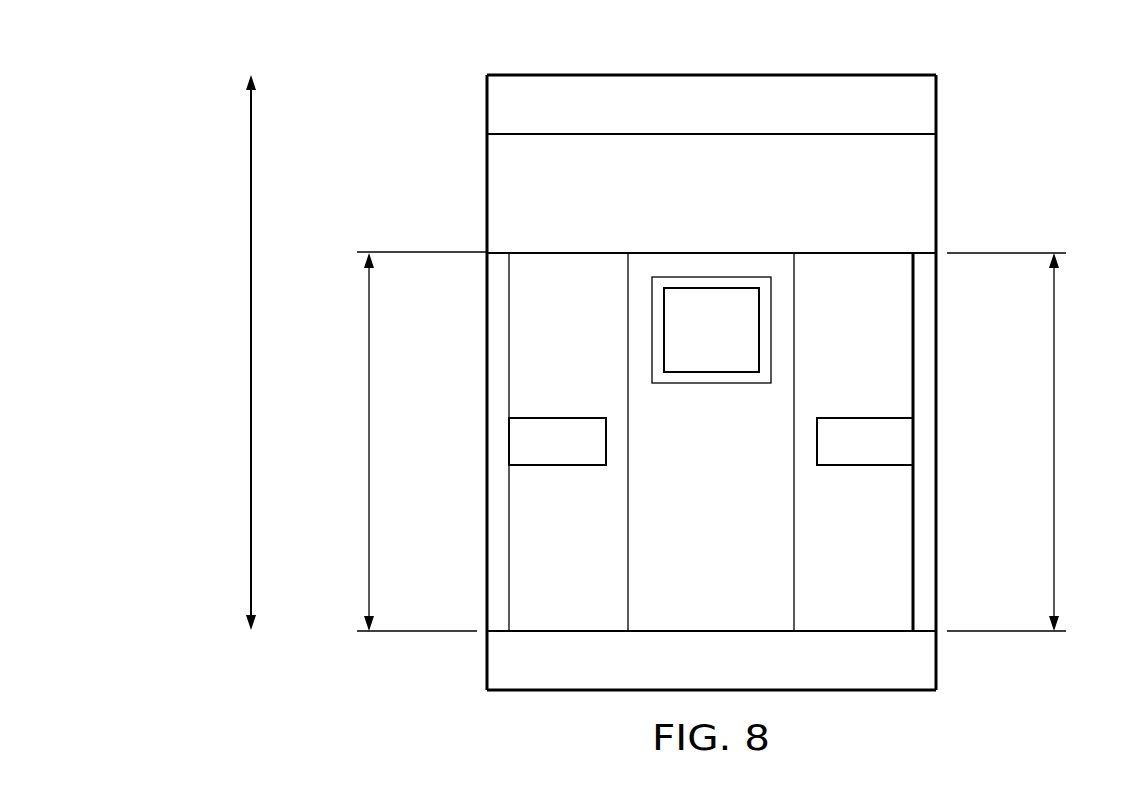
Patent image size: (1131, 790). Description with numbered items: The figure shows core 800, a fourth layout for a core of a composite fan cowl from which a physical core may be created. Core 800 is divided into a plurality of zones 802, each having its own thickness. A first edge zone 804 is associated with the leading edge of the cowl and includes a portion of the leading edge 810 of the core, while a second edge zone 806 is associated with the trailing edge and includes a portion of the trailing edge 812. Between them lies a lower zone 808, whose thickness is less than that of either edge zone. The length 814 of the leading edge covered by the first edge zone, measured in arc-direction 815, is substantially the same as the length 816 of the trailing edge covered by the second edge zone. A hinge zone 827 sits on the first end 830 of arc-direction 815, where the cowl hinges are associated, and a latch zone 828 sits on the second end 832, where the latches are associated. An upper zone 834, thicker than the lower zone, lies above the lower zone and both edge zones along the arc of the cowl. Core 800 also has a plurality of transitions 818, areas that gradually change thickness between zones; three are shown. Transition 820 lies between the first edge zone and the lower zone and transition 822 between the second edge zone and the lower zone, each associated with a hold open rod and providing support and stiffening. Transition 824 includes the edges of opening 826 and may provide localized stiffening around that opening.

The core 800 is at (398, 70).
The plurality of zones 802 is at (967, 188).
The first edge zone 804 is at (495, 549).
The second edge zone 806 is at (927, 550).
The lower zone 808 is at (734, 550).
The leading edge 810 is at (487, 443).
The trailing edge 812 is at (936, 443).
The length 814 is at (369, 442).
The arc-direction 815 is at (251, 353).
The length 816 is at (1054, 443).
The plurality of transitions 818 is at (957, 129).
The transition 820 is at (592, 349).
The transition 822 is at (876, 349).
The transition 824 is at (712, 377).
The opening 826 is at (734, 345).
The hinge zone 827 is at (734, 118).
The latch zone 828 is at (734, 674).
The first end 830 is at (712, 75).
The second end 832 is at (829, 691).
The upper zone 834 is at (734, 207).